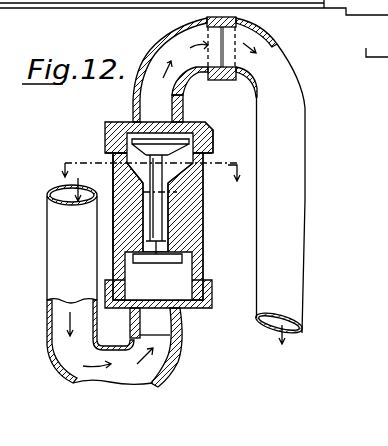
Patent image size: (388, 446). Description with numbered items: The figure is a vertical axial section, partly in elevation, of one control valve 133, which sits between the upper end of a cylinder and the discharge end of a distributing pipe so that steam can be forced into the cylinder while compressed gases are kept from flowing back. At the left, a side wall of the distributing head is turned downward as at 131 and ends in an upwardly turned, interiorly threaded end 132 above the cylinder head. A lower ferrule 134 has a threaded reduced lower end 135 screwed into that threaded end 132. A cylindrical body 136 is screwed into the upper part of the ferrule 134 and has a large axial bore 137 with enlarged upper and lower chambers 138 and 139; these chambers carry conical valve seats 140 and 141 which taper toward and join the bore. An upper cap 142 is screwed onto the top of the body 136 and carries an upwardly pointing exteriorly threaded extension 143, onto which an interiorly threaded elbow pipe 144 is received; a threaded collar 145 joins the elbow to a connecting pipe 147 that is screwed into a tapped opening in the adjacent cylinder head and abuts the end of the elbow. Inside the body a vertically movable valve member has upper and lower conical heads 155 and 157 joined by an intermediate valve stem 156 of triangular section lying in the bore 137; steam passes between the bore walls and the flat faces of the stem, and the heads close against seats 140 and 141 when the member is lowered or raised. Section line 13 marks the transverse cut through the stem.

The section line 13- 13 is at (151, 169).
The downwardly turned side wall of distributing head 131 is at (47, 265).
The upwardly turned interiorly threaded end 132 is at (184, 341).
The control valve 133 is at (212, 250).
The lower ferrule 134 is at (184, 323).
The threaded reduced lower end 135 is at (172, 367).
The cylindrical body 136 is at (122, 208).
The axial bore 137 is at (120, 231).
The upper chamber 138 is at (213, 132).
The lower chamber 139 is at (199, 291).
The upper conical valve seat 140 is at (197, 184).
The lower conical valve seat 141 is at (206, 228).
The upper cap 142 is at (215, 127).
The exteriorly threaded extension 143 is at (186, 88).
The elbow pipe 144 is at (150, 40).
The threaded collar 145 is at (238, 19).
The connecting pipe 147 is at (292, 106).
The upper conical head 155 is at (167, 143).
The valve stem 156 is at (163, 219).
The lower conical head 157 is at (177, 284).